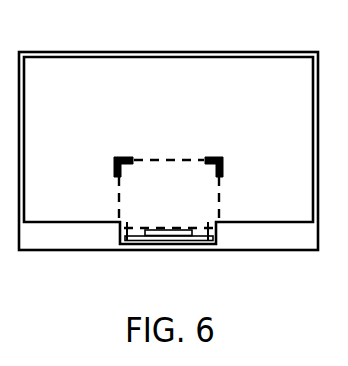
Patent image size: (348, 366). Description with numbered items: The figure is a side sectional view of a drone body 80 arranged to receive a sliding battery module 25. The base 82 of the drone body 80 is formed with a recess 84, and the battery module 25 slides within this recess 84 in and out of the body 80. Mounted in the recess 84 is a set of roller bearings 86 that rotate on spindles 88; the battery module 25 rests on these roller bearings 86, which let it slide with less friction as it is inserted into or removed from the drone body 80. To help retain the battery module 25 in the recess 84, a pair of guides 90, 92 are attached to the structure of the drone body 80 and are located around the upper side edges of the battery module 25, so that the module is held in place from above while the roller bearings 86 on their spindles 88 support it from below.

The drone body 80 is at (194, 52).
The base 82 is at (258, 221).
The battery module 25 is at (218, 203).
The guide 90 is at (122, 157).
The guide 92 is at (220, 157).
The recess 84 is at (132, 239).
The roller bearings 86 is at (142, 240).
The spindles 88 is at (203, 239).